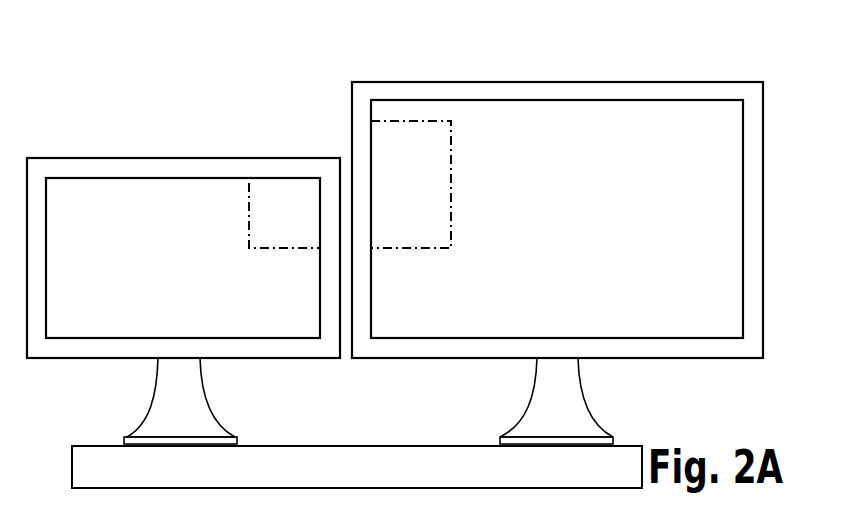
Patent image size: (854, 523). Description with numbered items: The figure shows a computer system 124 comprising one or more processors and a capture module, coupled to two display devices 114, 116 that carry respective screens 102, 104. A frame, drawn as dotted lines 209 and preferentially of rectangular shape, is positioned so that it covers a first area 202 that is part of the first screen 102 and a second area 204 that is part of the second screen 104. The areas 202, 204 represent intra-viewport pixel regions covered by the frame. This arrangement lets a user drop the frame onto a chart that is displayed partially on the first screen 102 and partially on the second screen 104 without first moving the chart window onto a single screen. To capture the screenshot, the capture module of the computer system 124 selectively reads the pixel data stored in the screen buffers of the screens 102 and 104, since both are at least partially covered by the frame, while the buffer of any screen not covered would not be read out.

The first screen 102 is at (119, 200).
The second screen 104 is at (582, 155).
The first display device 114 is at (197, 427).
The second display device 116 is at (577, 427).
The computer system 124 is at (450, 476).
The first area 202 is at (290, 215).
The second area 204 is at (384, 176).
The frame 209 is at (411, 121).